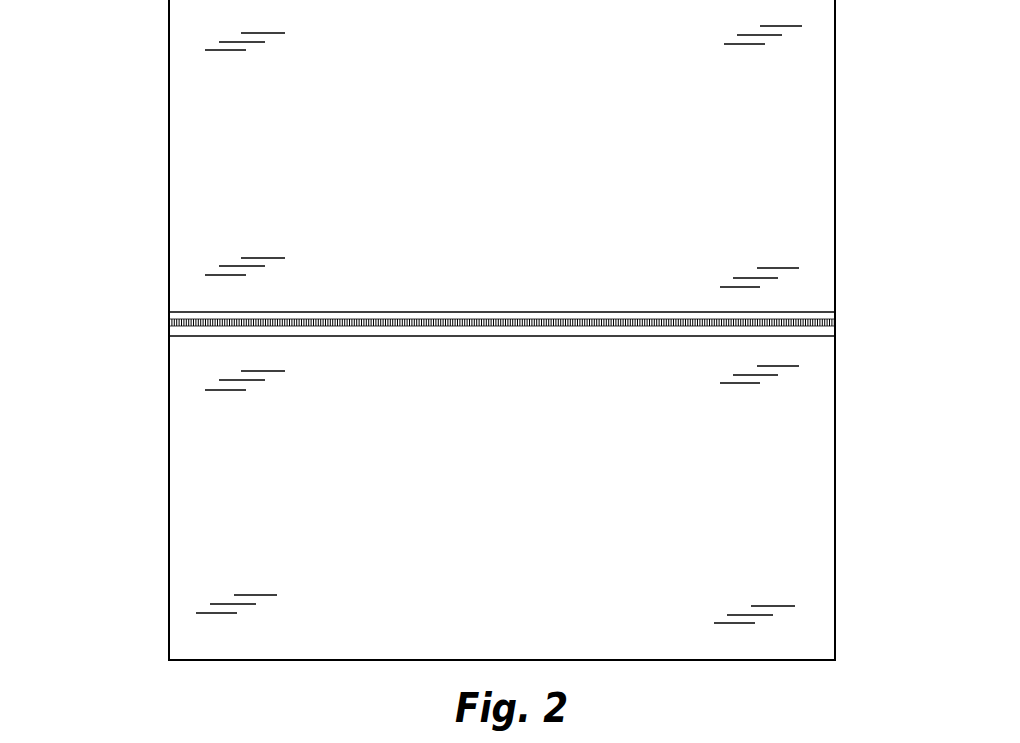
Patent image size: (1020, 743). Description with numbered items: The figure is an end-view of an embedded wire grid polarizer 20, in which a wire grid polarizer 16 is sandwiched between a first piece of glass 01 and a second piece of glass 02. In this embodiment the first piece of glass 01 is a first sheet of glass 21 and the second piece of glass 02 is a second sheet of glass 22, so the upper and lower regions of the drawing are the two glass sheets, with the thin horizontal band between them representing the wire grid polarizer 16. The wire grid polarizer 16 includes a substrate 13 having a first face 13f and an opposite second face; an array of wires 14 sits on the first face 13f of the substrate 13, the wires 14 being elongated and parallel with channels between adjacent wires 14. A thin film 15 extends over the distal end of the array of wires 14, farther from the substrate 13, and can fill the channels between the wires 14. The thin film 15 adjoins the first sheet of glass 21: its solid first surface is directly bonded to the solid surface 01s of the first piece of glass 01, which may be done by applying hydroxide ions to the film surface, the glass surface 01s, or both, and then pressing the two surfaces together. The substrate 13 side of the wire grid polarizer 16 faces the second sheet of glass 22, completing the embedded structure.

The embedded wire grid polarizer 20 is at (127, 61).
The first piece of glass 01 is at (228, 159).
The second piece of glass 02 is at (229, 502).
The first sheet of glass 21 is at (519, 159).
The second sheet of glass 22 is at (517, 502).
The solid surface of the first piece of glass 01s is at (445, 311).
The first face of the substrate 13f is at (384, 328).
The substrate 13 is at (836, 330).
The array of wires 14 is at (836, 323).
The thin film 15 is at (836, 319).
The wire grid polarizer 16 is at (178, 322).